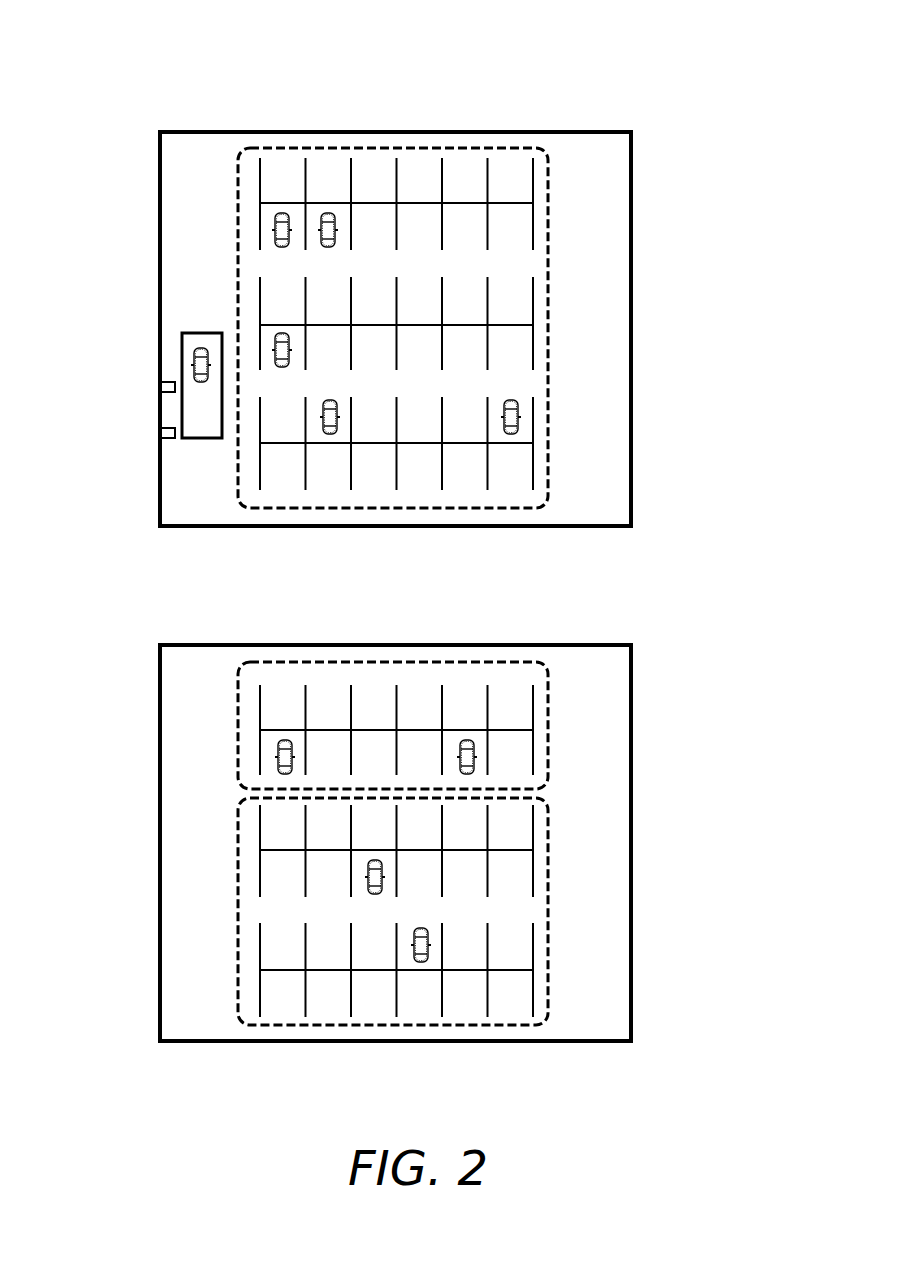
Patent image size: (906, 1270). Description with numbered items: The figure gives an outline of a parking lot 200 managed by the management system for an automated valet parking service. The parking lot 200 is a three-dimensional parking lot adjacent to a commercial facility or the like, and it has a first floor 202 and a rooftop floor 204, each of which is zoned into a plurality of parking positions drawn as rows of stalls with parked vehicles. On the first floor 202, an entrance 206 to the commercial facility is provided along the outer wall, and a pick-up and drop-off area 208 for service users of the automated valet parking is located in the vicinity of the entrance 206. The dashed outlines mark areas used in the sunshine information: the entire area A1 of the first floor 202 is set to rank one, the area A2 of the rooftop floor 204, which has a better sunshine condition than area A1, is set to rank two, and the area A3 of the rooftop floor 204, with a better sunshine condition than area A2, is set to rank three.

The parking lot 200 is at (601, 101).
The first floor (1F) 202 is at (595, 255).
The rooftop floor (RF) 204 is at (595, 855).
The entrance 206 is at (168, 410).
The pick-up and drop-off area 208 is at (190, 353).
The area A1 is at (240, 236).
The area A2 is at (240, 725).
The area A3 is at (240, 905).